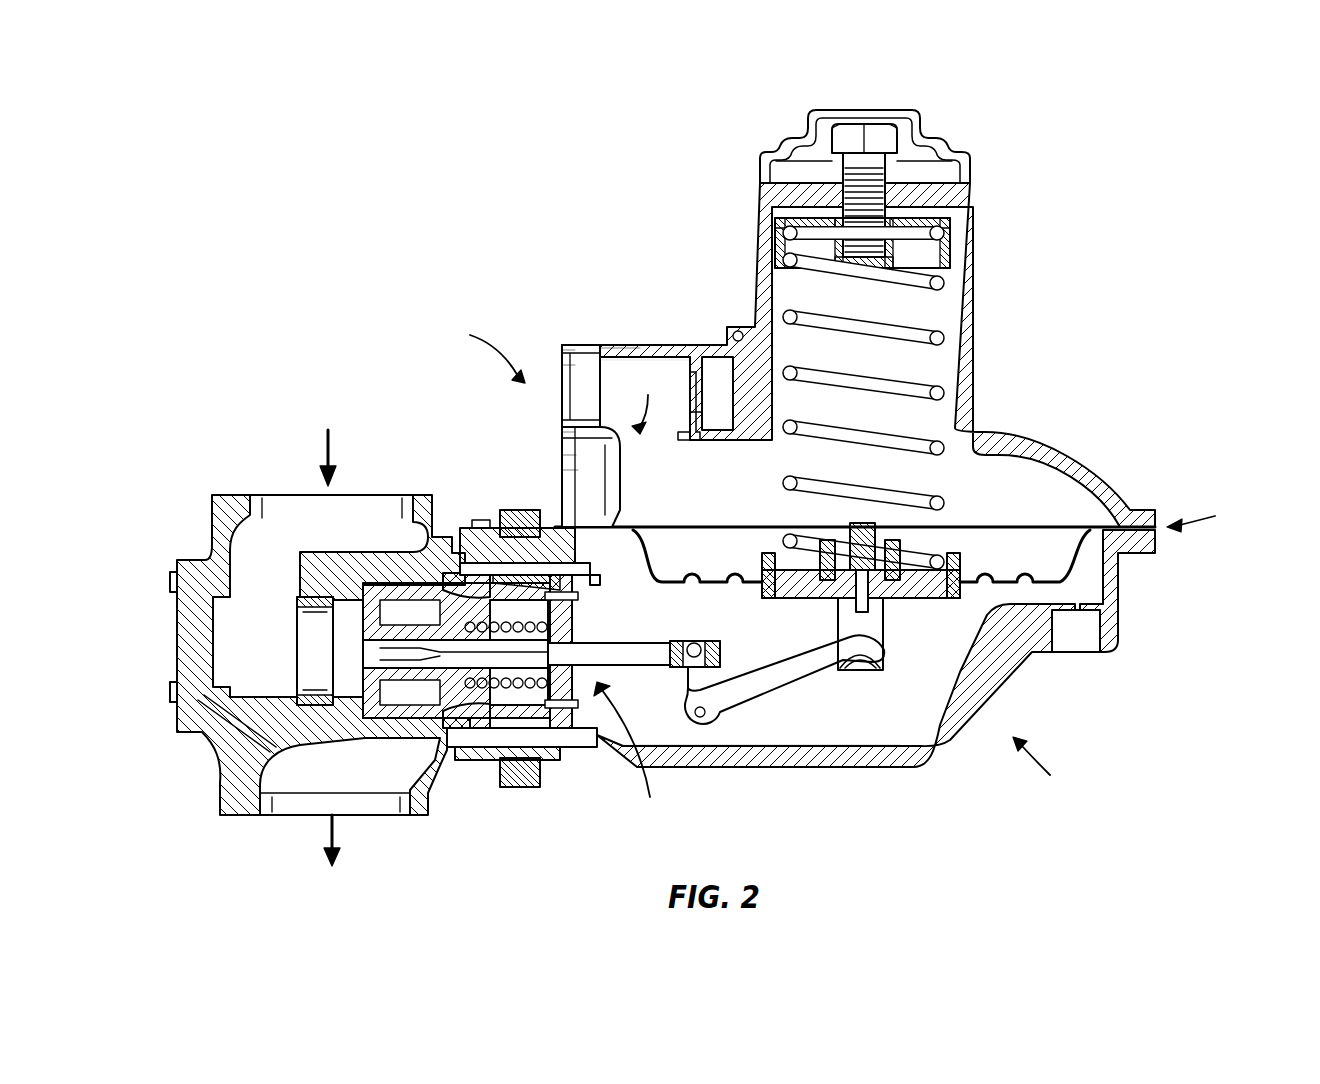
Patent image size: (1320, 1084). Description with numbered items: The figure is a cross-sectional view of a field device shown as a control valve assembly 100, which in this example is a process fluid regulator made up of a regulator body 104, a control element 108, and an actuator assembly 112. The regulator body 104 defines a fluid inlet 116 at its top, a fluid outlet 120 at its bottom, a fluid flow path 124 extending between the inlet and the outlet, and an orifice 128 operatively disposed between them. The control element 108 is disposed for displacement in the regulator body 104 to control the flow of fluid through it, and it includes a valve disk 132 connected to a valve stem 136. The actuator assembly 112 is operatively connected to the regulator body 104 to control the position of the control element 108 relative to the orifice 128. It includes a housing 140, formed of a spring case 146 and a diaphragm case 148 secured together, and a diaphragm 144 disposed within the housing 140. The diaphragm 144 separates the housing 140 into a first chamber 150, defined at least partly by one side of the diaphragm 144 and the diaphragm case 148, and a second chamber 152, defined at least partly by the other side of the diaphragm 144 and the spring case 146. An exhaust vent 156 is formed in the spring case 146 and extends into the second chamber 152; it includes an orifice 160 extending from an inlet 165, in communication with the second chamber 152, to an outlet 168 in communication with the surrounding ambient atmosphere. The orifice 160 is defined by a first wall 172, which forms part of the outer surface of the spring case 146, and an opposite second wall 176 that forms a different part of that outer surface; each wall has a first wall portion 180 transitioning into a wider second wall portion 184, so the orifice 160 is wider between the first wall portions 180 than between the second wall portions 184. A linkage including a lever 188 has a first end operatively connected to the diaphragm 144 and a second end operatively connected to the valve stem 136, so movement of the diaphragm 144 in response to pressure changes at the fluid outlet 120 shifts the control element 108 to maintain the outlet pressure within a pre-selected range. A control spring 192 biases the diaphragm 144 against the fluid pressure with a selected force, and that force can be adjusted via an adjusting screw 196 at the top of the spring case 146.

The control valve assembly 100 is at (628, 677).
The regulator body 104 is at (212, 540).
The control element 108 is at (604, 694).
The actuator assembly 112 is at (1189, 523).
The fluid inlet 116 is at (290, 495).
The fluid outlet 120 is at (358, 812).
The fluid flow path 124 is at (234, 633).
The orifice 128 is at (301, 652).
The valve disk 132 is at (392, 658).
The valve stem 136 is at (503, 658).
The housing 140 is at (758, 768).
The diaphragm 144 is at (1118, 590).
The spring case 146 is at (1037, 432).
The diaphragm case 148 is at (1012, 678).
The first chamber 150 is at (680, 624).
The second chamber 152 is at (680, 498).
The exhaust vent 156 is at (551, 409).
The orifice 160 is at (580, 418).
The vent passage 165 is at (682, 398).
The outlet 168 is at (562, 368).
The first wall 172 is at (607, 345).
The second wall 176 is at (576, 455).
The first wall portion 180 is at (575, 432).
The second wall portion 184 is at (578, 470).
The lever 188 is at (787, 680).
The control spring 192 is at (942, 270).
The adjusting screw 196 is at (893, 140).